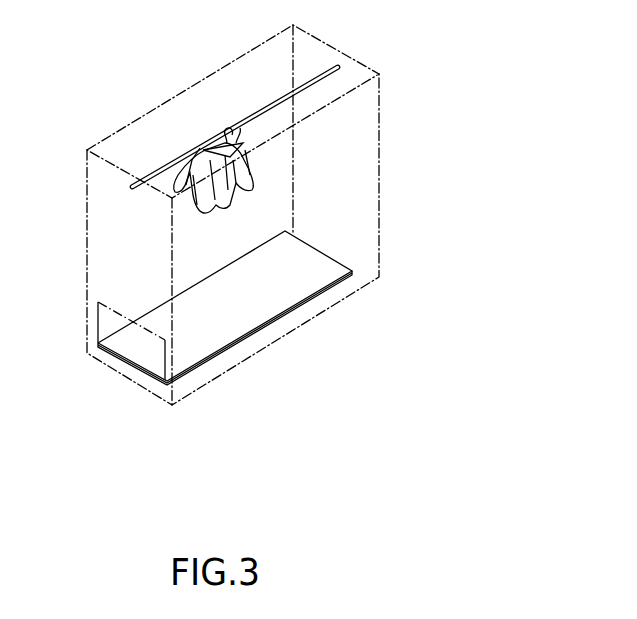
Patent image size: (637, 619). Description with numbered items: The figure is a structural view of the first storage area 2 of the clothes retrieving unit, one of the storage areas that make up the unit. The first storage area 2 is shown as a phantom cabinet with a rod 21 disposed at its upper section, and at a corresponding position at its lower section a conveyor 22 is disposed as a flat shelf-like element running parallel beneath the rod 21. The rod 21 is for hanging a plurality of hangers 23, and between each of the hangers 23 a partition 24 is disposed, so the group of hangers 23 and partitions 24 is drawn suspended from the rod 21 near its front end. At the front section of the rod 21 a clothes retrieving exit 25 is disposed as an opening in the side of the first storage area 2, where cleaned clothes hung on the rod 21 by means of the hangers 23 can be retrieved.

The first storage area 2 is at (158, 103).
The rod 21 is at (255, 112).
The conveyor 22 is at (225, 308).
The hanger 23 is at (235, 132).
The partition 24 is at (220, 140).
The clothes retrieving exit 25 is at (98, 320).